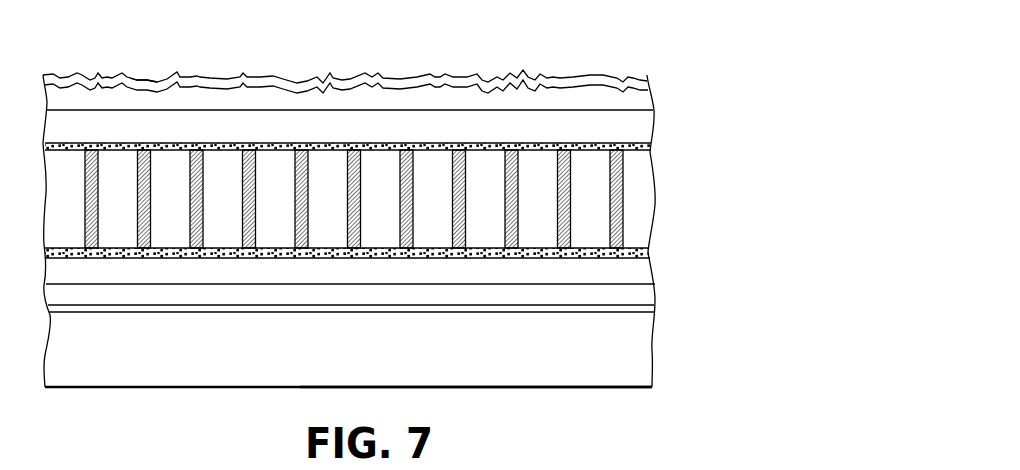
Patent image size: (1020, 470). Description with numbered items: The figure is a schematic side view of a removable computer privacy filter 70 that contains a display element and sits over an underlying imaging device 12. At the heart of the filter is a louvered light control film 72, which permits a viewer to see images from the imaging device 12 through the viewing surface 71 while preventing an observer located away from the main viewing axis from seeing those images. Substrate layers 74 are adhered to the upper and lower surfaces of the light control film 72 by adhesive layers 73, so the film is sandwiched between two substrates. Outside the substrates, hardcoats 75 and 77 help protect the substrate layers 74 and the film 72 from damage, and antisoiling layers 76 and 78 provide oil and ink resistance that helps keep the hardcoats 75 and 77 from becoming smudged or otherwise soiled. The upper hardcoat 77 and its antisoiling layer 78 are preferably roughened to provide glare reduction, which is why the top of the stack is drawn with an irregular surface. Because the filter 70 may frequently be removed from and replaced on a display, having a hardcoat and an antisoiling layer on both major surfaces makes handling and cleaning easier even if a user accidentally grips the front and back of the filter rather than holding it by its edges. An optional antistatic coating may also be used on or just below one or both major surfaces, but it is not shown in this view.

The removable computer privacy filter 70 is at (566, 44).
The viewing surface 71 is at (141, 78).
The louvered light control film 72 is at (653, 207).
The adhesive layers 73 is at (650, 146).
The substrate layers 74 is at (640, 122).
The hardcoat 75 is at (650, 298).
The antisoiling layer 76 is at (650, 312).
The hardcoat 77 is at (638, 98).
The antisoiling layer 78 is at (646, 80).
The imaging device 12 is at (645, 345).